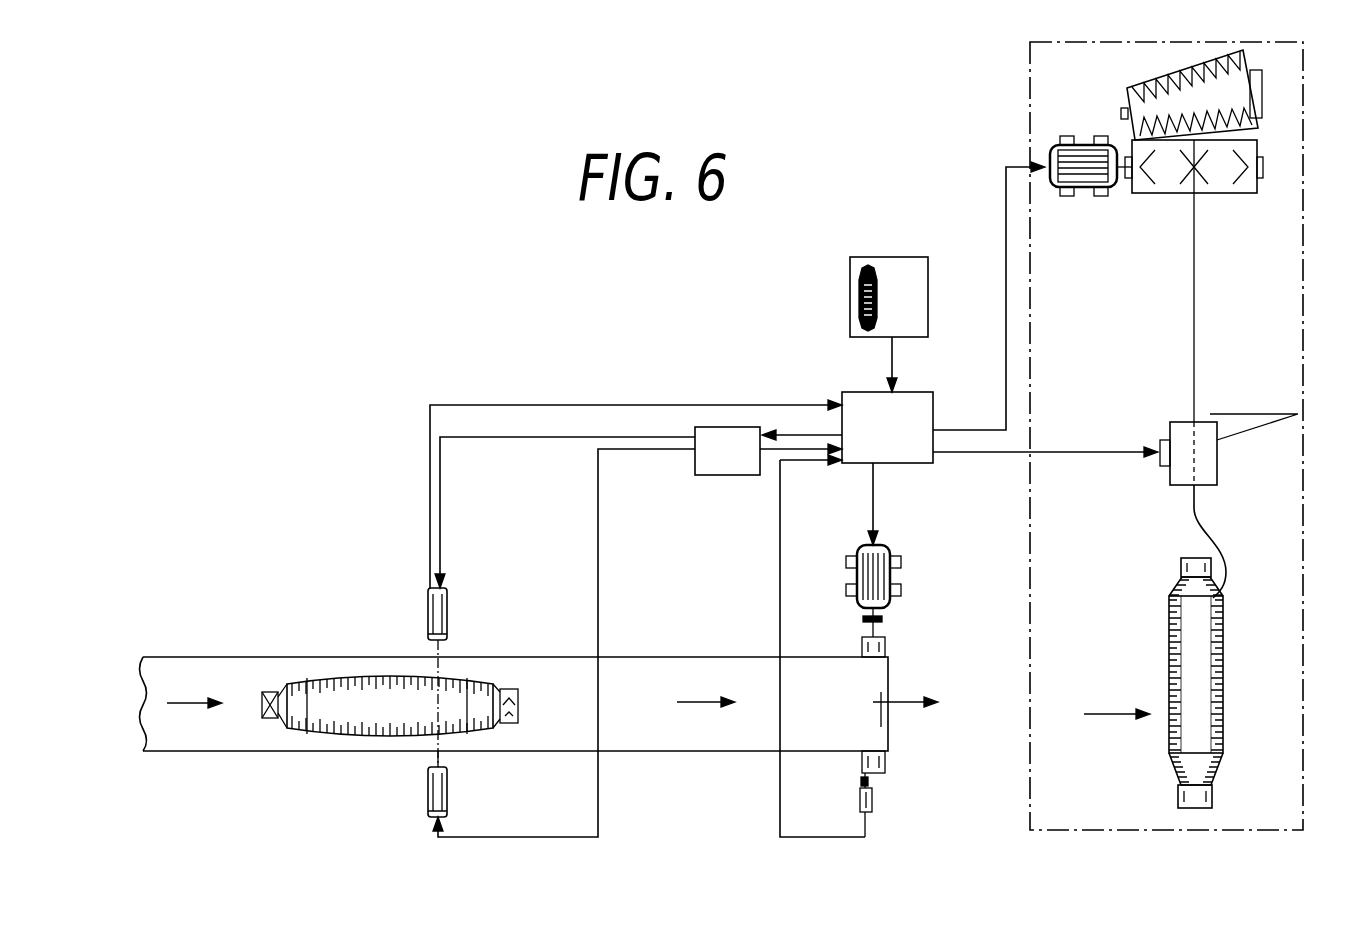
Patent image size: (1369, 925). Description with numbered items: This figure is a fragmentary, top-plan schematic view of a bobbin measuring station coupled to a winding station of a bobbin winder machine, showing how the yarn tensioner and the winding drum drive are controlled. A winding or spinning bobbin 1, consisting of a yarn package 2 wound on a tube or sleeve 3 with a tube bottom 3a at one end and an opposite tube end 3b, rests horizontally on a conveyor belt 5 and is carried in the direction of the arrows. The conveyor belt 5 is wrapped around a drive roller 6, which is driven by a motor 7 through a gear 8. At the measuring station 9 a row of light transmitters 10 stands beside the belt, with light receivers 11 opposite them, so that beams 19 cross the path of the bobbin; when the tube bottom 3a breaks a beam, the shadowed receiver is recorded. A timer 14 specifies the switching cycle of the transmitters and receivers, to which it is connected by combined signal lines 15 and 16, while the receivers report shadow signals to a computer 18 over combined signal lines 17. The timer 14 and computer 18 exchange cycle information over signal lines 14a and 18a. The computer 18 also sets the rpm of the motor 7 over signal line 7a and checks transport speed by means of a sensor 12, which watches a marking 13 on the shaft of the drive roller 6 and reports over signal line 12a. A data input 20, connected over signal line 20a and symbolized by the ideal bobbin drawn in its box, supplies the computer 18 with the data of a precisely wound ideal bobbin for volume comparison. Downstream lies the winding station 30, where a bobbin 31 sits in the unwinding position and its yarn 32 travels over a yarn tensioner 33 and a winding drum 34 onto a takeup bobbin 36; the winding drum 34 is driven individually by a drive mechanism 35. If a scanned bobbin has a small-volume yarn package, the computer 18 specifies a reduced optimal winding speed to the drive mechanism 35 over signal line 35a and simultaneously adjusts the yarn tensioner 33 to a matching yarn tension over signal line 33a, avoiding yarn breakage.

The winding or spinning bobbin 1 is at (447, 674).
The yarn package 2 is at (355, 716).
The tube or sleeve 3 is at (284, 692).
The tube bottom 3a is at (512, 688).
The bobbin tube end 3b is at (264, 691).
The conveyor belt 5 is at (231, 748).
The drive roller 6 is at (886, 646).
The motor 7 is at (891, 578).
The signal line 7a is at (875, 497).
The gear 8 is at (884, 620).
The measuring station 9 is at (469, 753).
The light transmitters 10 is at (428, 815).
The light receivers 11 is at (450, 613).
The sensor 12 is at (860, 806).
The signal line 12a is at (780, 810).
The marking 13 is at (860, 781).
The timer 14 is at (723, 467).
The signal line 14a is at (780, 455).
The combined signal lines 15 is at (598, 505).
The combined signal lines 16 is at (540, 438).
The combined signal lines 17 is at (554, 404).
The computer 18 is at (865, 450).
The signal line 18a is at (797, 436).
The beams 19 is at (434, 760).
The data input 20 is at (900, 260).
The signal line 20a is at (895, 364).
The winding station 30 is at (1305, 582).
The bobbin 31 is at (1213, 684).
The yarn 32 is at (1216, 550).
The yarn tensioner 33 is at (1217, 483).
The signal line 33a is at (1012, 455).
The winding drum 34 is at (1162, 196).
The drive mechanism 35 is at (1078, 146).
The signal line 35a is at (1006, 220).
The takeup bobbin 36 is at (1158, 86).